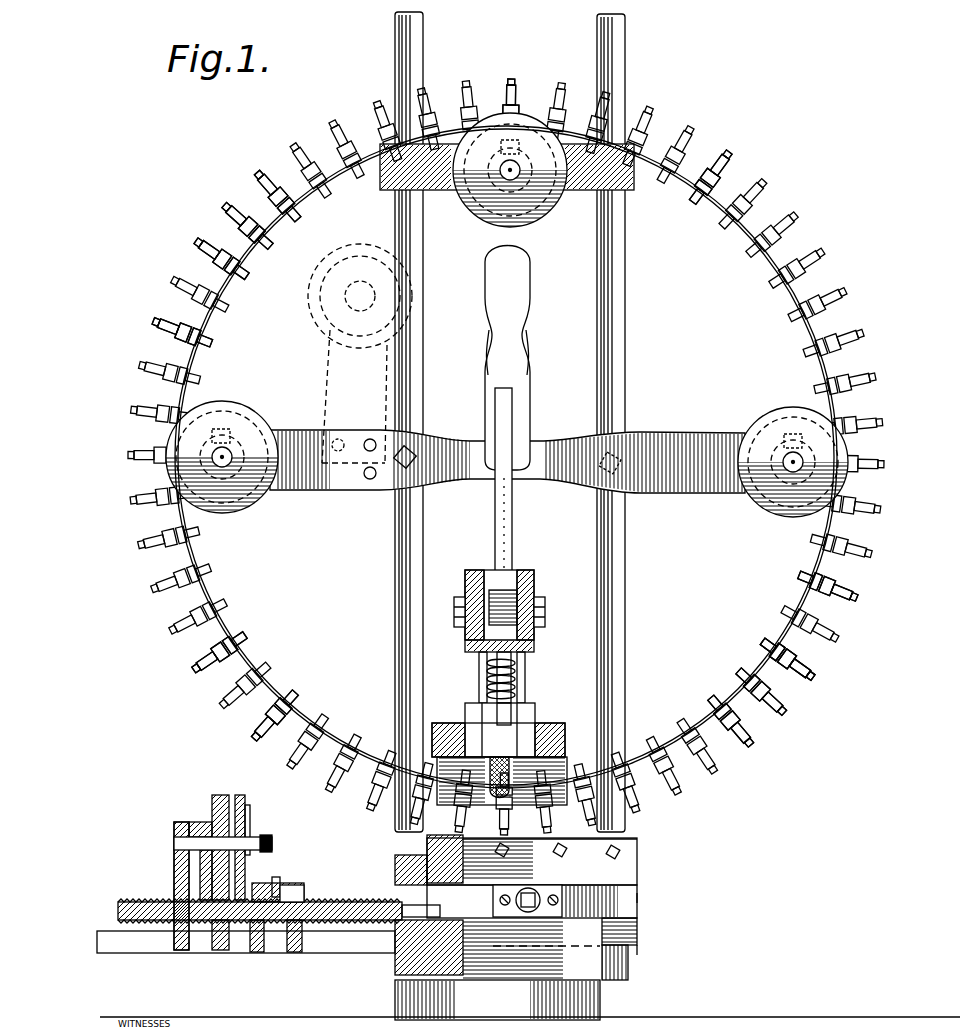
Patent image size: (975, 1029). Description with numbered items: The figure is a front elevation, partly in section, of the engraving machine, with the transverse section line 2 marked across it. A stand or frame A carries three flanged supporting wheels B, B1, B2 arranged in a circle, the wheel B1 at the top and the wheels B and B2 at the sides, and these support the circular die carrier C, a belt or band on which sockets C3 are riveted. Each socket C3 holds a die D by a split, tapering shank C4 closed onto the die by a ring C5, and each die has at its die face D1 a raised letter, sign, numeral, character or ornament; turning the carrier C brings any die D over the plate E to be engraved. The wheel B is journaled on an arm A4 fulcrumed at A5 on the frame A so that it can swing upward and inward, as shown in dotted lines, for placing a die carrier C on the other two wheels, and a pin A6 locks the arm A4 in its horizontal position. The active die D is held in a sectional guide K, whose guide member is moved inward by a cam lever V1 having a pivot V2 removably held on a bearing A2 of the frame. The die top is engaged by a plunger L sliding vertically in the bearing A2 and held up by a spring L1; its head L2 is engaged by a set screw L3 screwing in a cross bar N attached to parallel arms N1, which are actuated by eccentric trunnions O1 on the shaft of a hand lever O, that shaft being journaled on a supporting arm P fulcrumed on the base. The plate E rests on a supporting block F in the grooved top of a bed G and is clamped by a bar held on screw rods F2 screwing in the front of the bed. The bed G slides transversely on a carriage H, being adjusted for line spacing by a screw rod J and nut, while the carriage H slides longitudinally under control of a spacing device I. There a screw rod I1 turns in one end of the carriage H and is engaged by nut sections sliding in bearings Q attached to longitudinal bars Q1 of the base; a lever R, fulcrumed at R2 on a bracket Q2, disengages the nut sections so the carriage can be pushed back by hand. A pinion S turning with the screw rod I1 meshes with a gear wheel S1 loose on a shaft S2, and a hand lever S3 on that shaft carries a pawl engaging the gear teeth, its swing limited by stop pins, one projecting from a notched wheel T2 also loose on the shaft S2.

The section line 2 is at (512, 85).
The stand or frame A is at (506, 457).
The bearing A2 is at (473, 705).
The arm A4 is at (305, 488).
The fulcrum A5 is at (372, 438).
The pin A6 is at (370, 480).
The flanged supporting wheel B is at (232, 409).
The flanged supporting wheel B1 is at (547, 215).
The flanged supporting wheel B2 is at (757, 506).
The die carrier C is at (311, 212).
The socket C3 is at (292, 208).
The split shank C4 is at (222, 268).
The ring C5 is at (258, 234).
The die D is at (748, 188).
The die face D1 is at (262, 722).
The hand lever O is at (520, 410).
The eccentric trunnion O1 is at (472, 574).
The supporting arm P is at (513, 566).
The cross bar N is at (536, 644).
The parallel arms N1 is at (470, 630).
The plunger L is at (520, 688).
The spring L1 is at (489, 680).
The plunger head L2 is at (530, 665).
The set screw L3 is at (512, 605).
The cam lever V1 is at (482, 745).
The pivot V2 is at (544, 722).
The sectional guide K is at (445, 750).
The plate E is at (479, 907).
The supporting block F is at (493, 860).
The screw rods F2 is at (508, 849).
The bed G is at (625, 872).
The carriage H is at (625, 913).
The screw rod J is at (528, 906).
The spacing device I is at (171, 864).
The screw rod I1 is at (346, 904).
The pinion S is at (225, 935).
The gear wheel S1 is at (223, 800).
The shaft S2 is at (177, 842).
The hand lever S3 is at (212, 830).
The notched wheel T2 is at (249, 808).
The lever R is at (307, 888).
The fulcrum R2 is at (279, 877).
The bearings Q is at (266, 953).
The longitudinally extending bars Q1 is at (340, 953).
The bracket Q2 is at (290, 882).